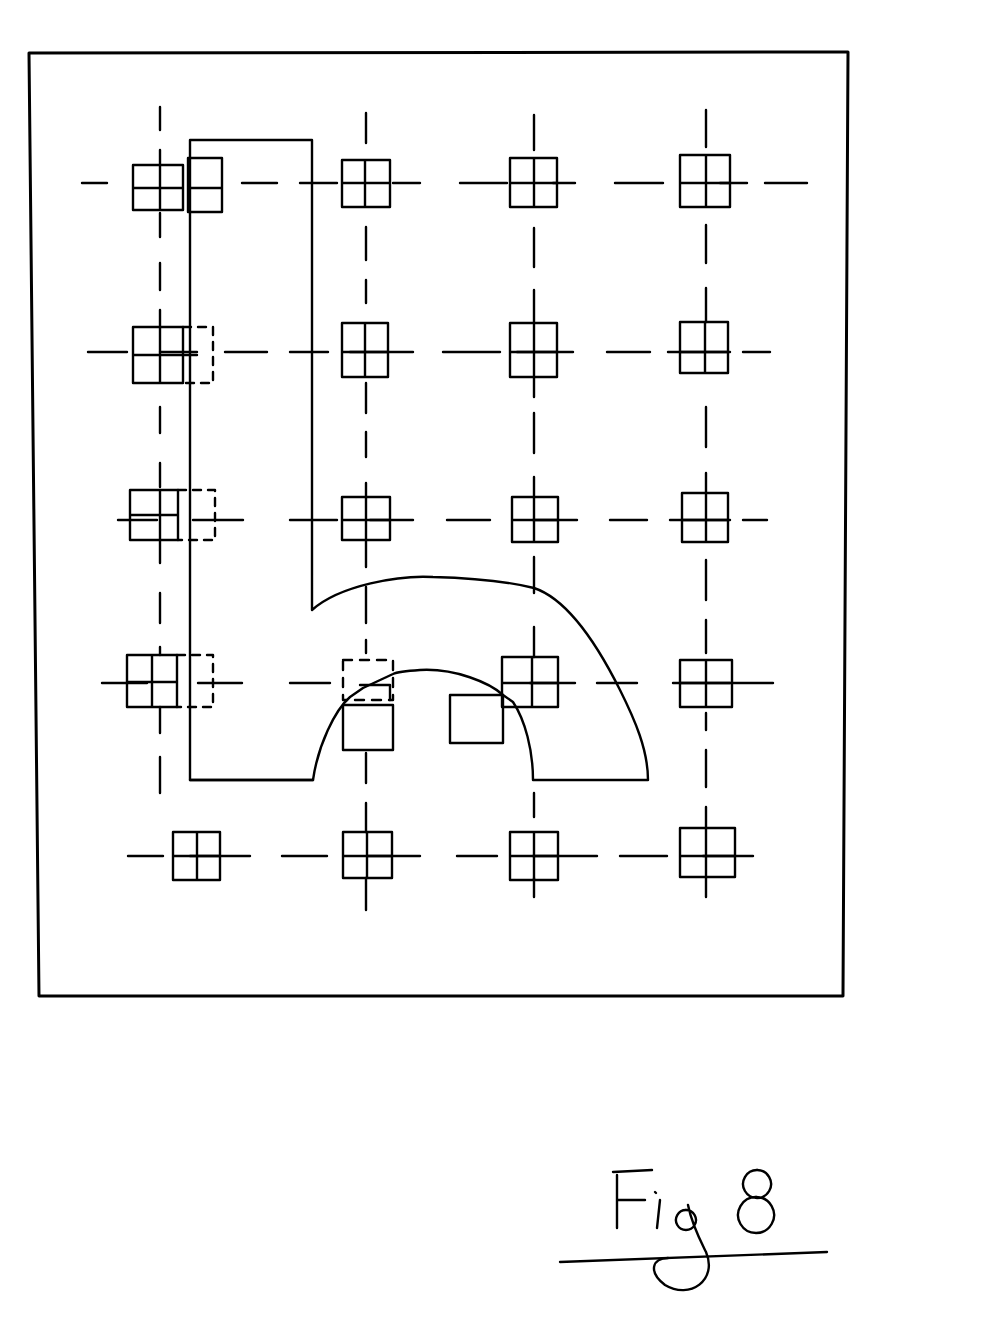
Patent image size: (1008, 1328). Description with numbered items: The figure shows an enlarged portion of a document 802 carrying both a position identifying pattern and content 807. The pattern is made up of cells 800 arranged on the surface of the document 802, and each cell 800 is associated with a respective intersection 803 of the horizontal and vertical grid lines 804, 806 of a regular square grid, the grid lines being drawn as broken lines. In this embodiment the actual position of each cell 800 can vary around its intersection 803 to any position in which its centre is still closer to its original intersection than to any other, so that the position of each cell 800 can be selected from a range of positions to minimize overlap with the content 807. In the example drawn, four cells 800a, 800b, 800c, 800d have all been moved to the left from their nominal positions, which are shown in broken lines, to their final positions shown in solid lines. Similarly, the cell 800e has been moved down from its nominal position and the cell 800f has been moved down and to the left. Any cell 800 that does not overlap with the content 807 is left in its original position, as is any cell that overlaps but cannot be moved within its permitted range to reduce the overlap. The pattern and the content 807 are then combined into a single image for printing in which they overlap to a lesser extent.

The cells 800 is at (346, 158).
The cell 800a is at (135, 175).
The cell 800b is at (135, 343).
The cell 800c is at (130, 510).
The cell 800d is at (130, 680).
The cell 800e is at (393, 752).
The cell 800f is at (470, 755).
The document 802 is at (620, 112).
The intersection 803 is at (533, 183).
The horizontal grid lines 804 is at (640, 185).
The vertical grid lines 806 is at (533, 425).
The content 807 is at (262, 738).